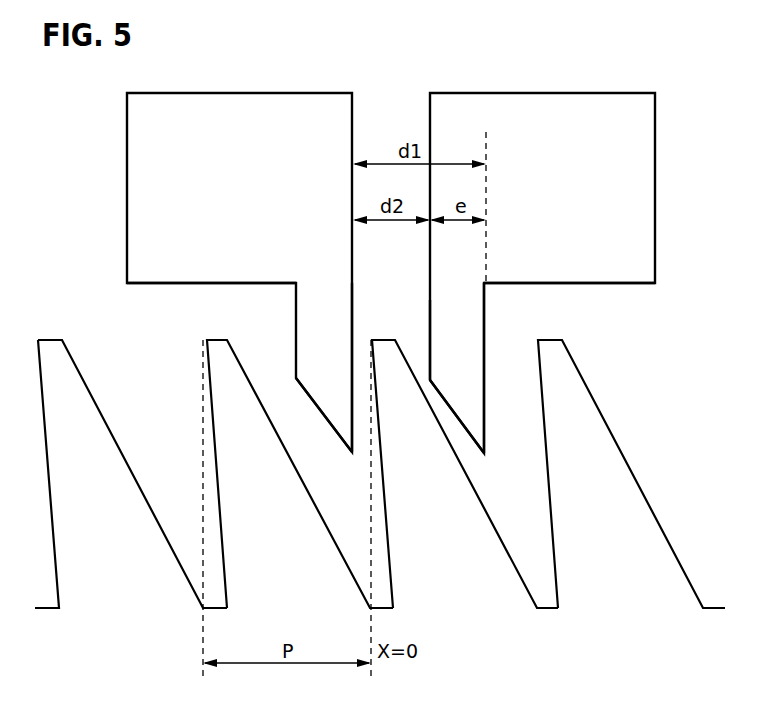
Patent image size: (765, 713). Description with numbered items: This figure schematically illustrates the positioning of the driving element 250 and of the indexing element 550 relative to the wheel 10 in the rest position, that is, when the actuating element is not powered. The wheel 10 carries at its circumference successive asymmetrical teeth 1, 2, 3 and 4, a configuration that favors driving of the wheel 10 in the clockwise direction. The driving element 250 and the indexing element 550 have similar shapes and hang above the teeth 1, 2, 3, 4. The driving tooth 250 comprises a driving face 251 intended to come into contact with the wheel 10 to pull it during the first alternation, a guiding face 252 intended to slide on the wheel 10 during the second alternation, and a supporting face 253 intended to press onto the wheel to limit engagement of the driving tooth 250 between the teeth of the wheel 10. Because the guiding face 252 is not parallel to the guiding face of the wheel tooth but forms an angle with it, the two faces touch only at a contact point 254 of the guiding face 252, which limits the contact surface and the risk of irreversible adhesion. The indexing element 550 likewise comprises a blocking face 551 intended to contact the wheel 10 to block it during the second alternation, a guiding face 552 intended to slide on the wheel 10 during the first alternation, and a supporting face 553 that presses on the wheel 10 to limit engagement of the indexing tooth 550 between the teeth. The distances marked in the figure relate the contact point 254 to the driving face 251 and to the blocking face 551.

The indexing element 550 is at (228, 272).
The supporting face 553 is at (145, 283).
The guiding face 552 is at (318, 413).
The blocking face 551 is at (366, 417).
The driving element 250 is at (570, 315).
The supporting face 253 is at (582, 284).
The driving face 251 is at (485, 338).
The contact point 254 is at (418, 378).
The guiding face 252 is at (467, 430).
The wheel 10 is at (393, 474).
The tooth 1 is at (143, 497).
The tooth 2 is at (310, 498).
The tooth 3 is at (477, 498).
The tooth 4 is at (643, 500).